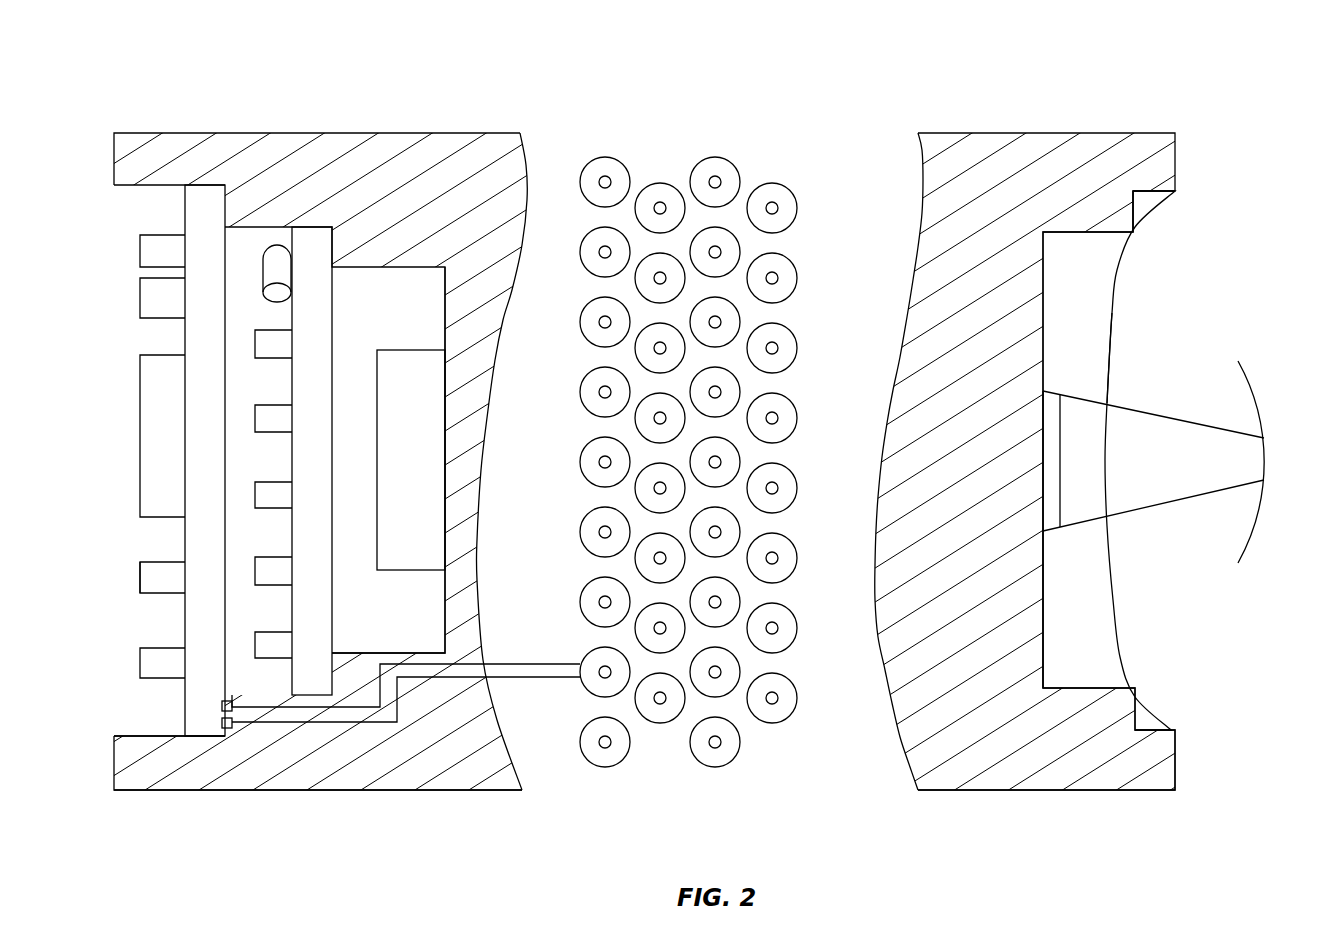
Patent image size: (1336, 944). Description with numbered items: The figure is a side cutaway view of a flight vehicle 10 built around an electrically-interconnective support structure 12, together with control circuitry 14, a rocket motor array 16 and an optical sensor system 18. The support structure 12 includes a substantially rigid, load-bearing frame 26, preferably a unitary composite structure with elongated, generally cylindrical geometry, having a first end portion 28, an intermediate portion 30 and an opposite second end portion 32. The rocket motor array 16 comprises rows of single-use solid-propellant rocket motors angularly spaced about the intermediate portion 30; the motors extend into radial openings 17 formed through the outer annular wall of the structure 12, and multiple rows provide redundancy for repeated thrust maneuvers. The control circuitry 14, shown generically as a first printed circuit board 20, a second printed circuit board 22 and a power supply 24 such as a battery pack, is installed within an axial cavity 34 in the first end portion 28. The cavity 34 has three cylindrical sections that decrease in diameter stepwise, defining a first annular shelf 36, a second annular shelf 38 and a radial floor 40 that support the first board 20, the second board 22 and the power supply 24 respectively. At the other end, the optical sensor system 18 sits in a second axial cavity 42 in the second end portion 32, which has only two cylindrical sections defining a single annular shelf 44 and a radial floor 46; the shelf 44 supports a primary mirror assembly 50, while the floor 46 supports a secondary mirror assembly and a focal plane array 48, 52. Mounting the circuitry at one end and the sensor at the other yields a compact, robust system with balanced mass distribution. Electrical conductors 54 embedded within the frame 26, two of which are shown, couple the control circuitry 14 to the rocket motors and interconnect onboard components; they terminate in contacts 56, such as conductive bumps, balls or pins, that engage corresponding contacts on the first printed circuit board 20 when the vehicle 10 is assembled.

The flight vehicle 10 is at (99, 58).
The electrically-interconnective support structure 12 is at (880, 147).
The control circuitry 14 is at (149, 584).
The rocket motor array 16 is at (673, 457).
The radial openings 17 is at (580, 322).
The optical sensor system 18 is at (1189, 455).
The first printed circuit board 20 is at (147, 428).
The second printed circuit board 22 is at (255, 497).
The power supply 24 is at (425, 475).
The load-bearing frame 26 is at (553, 144).
The first end portion 28 is at (146, 779).
The intermediate portion 30 is at (823, 757).
The second end portion 32 is at (1148, 783).
The axial cavity 34 is at (156, 214).
The first annular shelf 36 is at (232, 228).
The second annular shelf 38 is at (335, 268).
The radial floor 40 is at (444, 622).
The second axial cavity 42 is at (1090, 280).
The annular shelf 44 is at (1136, 205).
The radial floor 46 is at (1045, 575).
The focal plane array 48 is at (1268, 458).
The mirror assembly 50 is at (1113, 320).
The focal plane array 52 is at (1063, 458).
The electrical conductors 54 is at (541, 664).
The contacts 56 is at (230, 700).